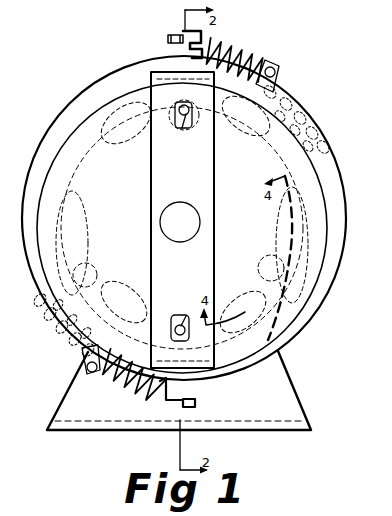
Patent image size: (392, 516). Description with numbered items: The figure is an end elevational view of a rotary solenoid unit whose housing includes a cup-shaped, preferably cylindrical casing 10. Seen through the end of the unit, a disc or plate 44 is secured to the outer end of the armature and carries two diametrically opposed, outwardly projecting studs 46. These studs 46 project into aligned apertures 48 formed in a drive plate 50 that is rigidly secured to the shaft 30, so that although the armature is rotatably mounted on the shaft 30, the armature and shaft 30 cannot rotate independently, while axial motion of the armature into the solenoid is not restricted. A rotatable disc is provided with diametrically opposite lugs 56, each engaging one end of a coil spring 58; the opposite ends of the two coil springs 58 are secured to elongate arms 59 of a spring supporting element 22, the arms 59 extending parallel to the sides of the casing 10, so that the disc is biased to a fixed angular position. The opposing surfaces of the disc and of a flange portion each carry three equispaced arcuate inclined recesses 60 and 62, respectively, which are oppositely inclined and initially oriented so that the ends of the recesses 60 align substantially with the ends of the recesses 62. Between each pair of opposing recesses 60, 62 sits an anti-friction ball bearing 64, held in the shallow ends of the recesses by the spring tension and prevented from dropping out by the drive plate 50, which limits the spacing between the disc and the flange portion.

The cup-shaped casing 10 is at (333, 226).
The spring supporting element 22 is at (169, 38).
The shaft 30 is at (173, 214).
The disc or plate 44 is at (88, 145).
The studs 46 is at (188, 130).
The apertures 48 is at (177, 128).
The drive plate 50 is at (206, 189).
The lugs 56 is at (280, 70).
The coil spring 58 is at (232, 60).
The elongate arms 59 is at (176, 35).
The arcuate inclined recesses 60 is at (122, 123).
The arcuate inclined recesses 62 is at (70, 202).
The ball bearing 64 is at (88, 268).